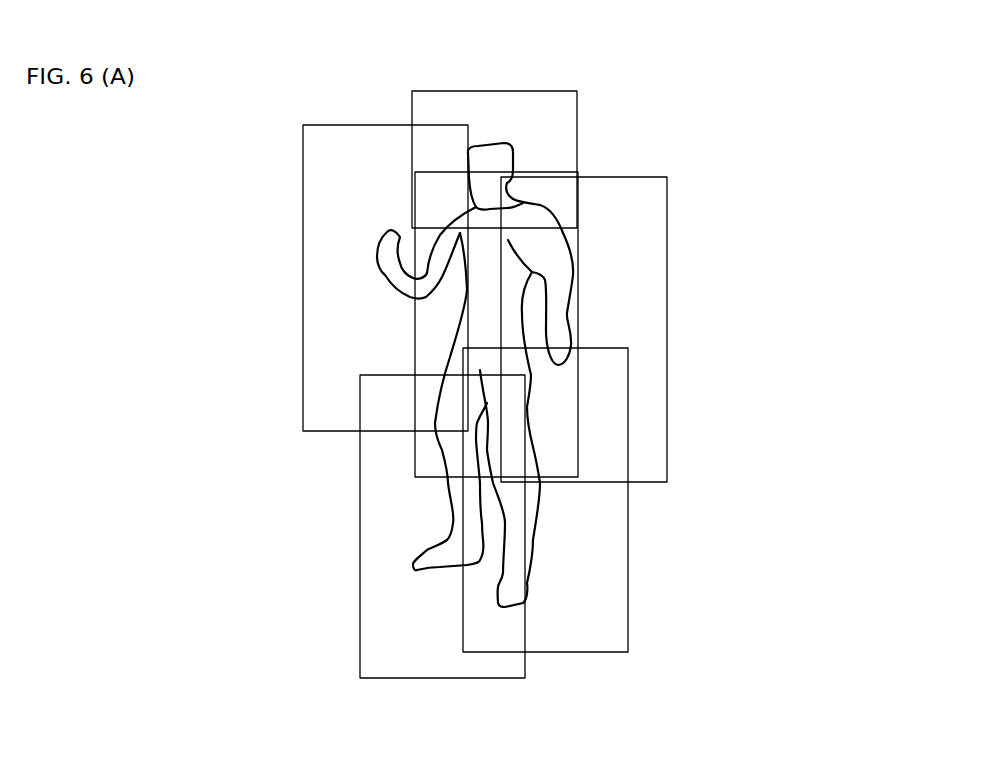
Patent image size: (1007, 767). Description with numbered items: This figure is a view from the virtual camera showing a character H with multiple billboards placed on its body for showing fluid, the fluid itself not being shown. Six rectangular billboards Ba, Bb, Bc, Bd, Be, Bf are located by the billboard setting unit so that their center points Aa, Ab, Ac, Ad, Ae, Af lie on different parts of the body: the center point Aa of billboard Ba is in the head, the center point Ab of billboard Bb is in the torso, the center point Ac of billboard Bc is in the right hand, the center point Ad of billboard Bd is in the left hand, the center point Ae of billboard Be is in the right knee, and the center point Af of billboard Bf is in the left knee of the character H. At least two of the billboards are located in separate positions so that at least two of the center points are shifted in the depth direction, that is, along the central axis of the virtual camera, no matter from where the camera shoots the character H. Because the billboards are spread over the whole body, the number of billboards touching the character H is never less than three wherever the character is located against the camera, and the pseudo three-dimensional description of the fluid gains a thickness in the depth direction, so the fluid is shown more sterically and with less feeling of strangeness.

The character H is at (528, 160).
The center point of billboard Ba Aa is at (493, 159).
The center point of billboard Bb Ab is at (493, 296).
The center point of billboard Bc Ac is at (391, 262).
The center point of billboard Bd Ad is at (562, 332).
The center point of billboard Be Ae is at (460, 449).
The center point of billboard Bf Af is at (510, 466).
The billboard Ba is at (530, 90).
The billboard Bb is at (580, 237).
The billboard Bc is at (302, 183).
The billboard Bd is at (667, 348).
The billboard Be is at (358, 573).
The billboard Bf is at (628, 569).